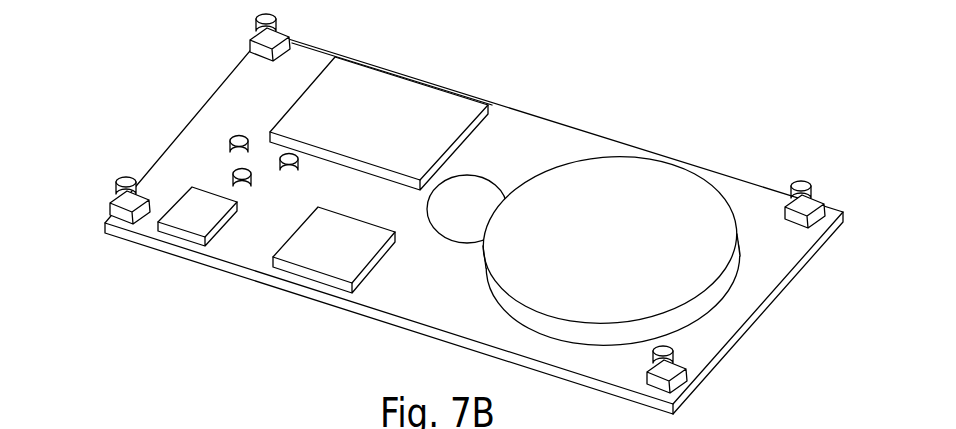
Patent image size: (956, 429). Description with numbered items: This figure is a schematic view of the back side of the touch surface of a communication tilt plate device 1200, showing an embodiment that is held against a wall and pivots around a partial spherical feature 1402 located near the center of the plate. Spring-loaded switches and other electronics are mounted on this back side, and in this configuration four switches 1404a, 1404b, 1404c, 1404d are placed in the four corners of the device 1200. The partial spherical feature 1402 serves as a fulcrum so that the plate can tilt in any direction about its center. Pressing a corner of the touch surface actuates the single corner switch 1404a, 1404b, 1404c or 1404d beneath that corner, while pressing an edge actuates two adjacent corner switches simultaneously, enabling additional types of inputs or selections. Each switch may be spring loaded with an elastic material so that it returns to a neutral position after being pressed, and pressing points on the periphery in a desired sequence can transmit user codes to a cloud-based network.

The communication tilt plate device 1200 is at (143, 428).
The partial spherical feature 1402 is at (502, 163).
The switch 1404a is at (258, 50).
The switch 1404b is at (820, 216).
The switch 1404c is at (116, 211).
The switch 1404d is at (676, 377).